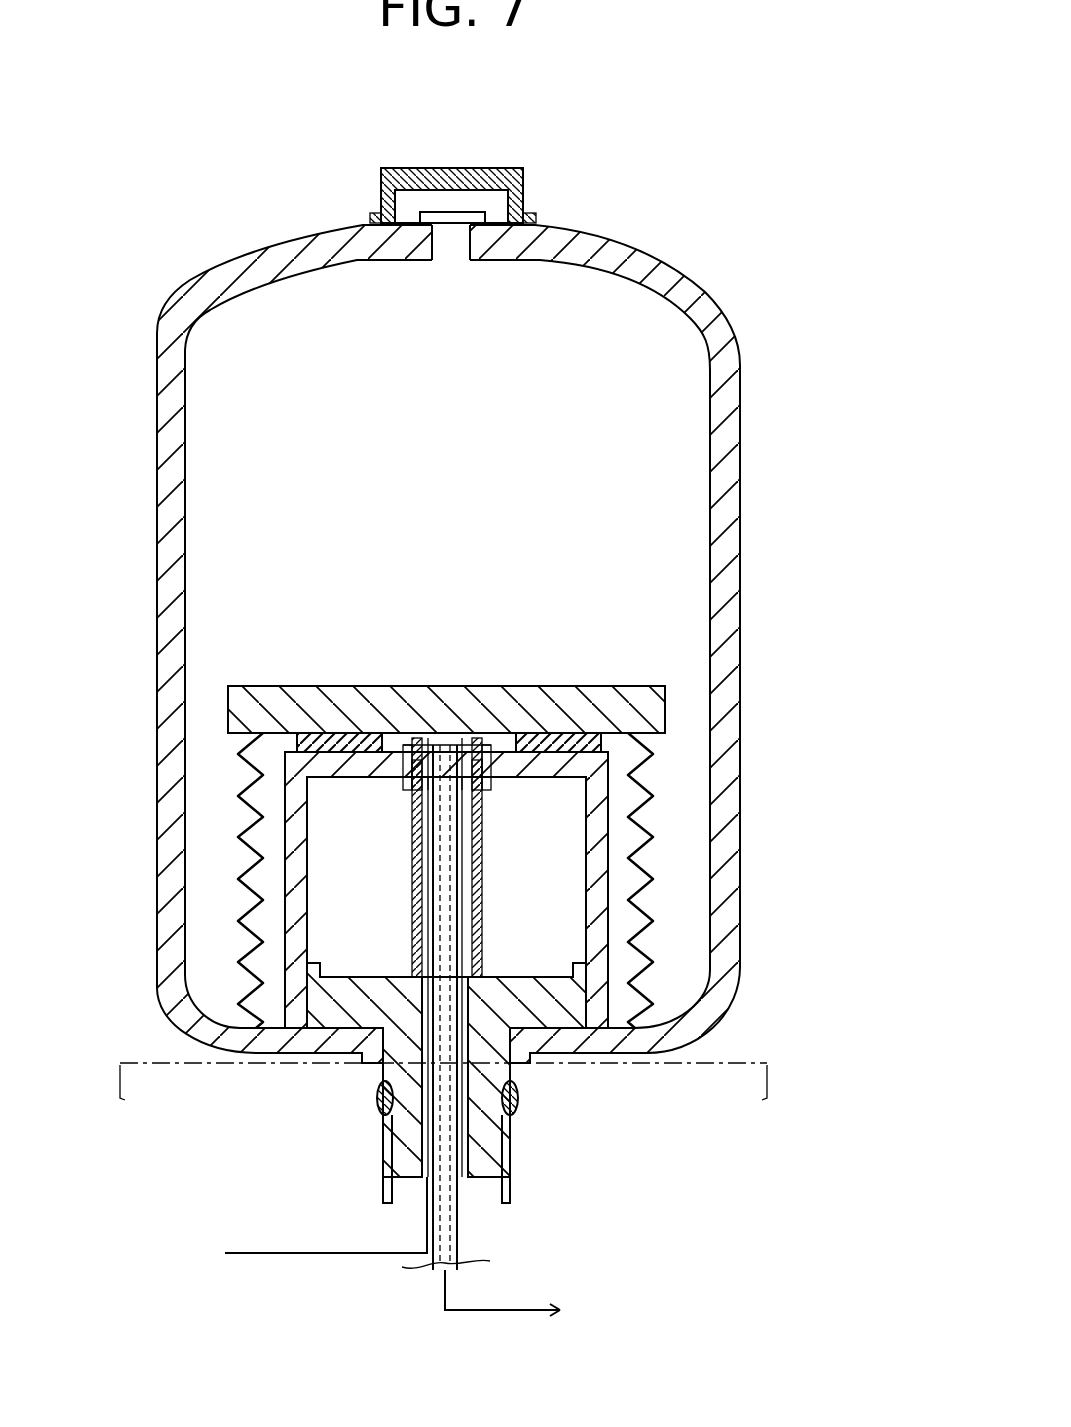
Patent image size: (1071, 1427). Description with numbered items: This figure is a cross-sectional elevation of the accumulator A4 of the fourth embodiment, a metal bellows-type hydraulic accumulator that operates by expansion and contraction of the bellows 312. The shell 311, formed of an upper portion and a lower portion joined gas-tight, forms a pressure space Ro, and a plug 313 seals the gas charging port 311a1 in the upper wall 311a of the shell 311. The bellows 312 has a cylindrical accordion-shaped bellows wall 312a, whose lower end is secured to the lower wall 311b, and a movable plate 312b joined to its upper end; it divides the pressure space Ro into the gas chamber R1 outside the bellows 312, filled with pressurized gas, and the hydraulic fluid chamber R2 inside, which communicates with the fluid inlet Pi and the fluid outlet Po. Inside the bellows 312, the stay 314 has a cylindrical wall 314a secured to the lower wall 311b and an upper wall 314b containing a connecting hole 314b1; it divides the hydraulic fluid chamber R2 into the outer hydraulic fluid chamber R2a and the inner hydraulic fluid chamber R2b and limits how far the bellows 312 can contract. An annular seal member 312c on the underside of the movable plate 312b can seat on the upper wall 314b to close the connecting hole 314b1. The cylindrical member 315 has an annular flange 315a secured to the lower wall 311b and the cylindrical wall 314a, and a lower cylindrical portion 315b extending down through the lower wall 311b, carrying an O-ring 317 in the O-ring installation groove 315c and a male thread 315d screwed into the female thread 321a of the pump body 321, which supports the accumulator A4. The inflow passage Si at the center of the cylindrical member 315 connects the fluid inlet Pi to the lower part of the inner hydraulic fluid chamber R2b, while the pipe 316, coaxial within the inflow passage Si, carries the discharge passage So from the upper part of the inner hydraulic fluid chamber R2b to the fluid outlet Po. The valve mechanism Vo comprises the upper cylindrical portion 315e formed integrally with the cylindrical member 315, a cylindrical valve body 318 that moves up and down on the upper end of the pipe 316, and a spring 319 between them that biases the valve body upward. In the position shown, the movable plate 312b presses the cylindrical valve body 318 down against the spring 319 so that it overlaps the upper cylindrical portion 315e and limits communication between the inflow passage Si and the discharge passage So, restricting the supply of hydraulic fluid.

The shell 311 is at (160, 393).
The upper wall 311a is at (570, 243).
The gas charging port 311a1 is at (457, 250).
The lower wall 311b is at (634, 1051).
The plug 313 is at (458, 168).
The bellows 312 is at (652, 838).
The bellows wall 312a is at (650, 907).
The movable plate 312b is at (668, 705).
The annular seal member 312c is at (548, 738).
The stay 314 is at (292, 765).
The cylindrical wall 314a is at (293, 903).
The upper wall 314b is at (355, 742).
The connecting hole 314b1 is at (445, 737).
The cylindrical member 315 is at (498, 1045).
The annular flange 315a is at (333, 1015).
The lower cylindrical portion 315b is at (383, 1195).
The O-ring installation groove 315c is at (375, 1107).
The male thread 315d is at (384, 1145).
The upper cylindrical portion 315e is at (412, 880).
The pipe 316 is at (470, 880).
The O-ring 317 is at (516, 1100).
The cylindrical valve body 318 is at (492, 790).
The spring 319 is at (405, 772).
The pump body 321 is at (735, 1077).
The female thread 321a is at (512, 1190).
The accumulator A4 is at (715, 258).
The gas chamber R1 is at (200, 471).
The hydraulic fluid chamber R2 is at (300, 830).
The outer hydraulic fluid chamber R2a is at (285, 805).
The inner hydraulic fluid chamber R2b is at (300, 955).
The pressure space Ro is at (698, 522).
The discharge passage So is at (447, 932).
The inflow passage Si is at (468, 945).
The valve mechanism Vo is at (469, 738).
The fluid inlet Pi is at (473, 1186).
The fluid outlet Po is at (438, 1279).